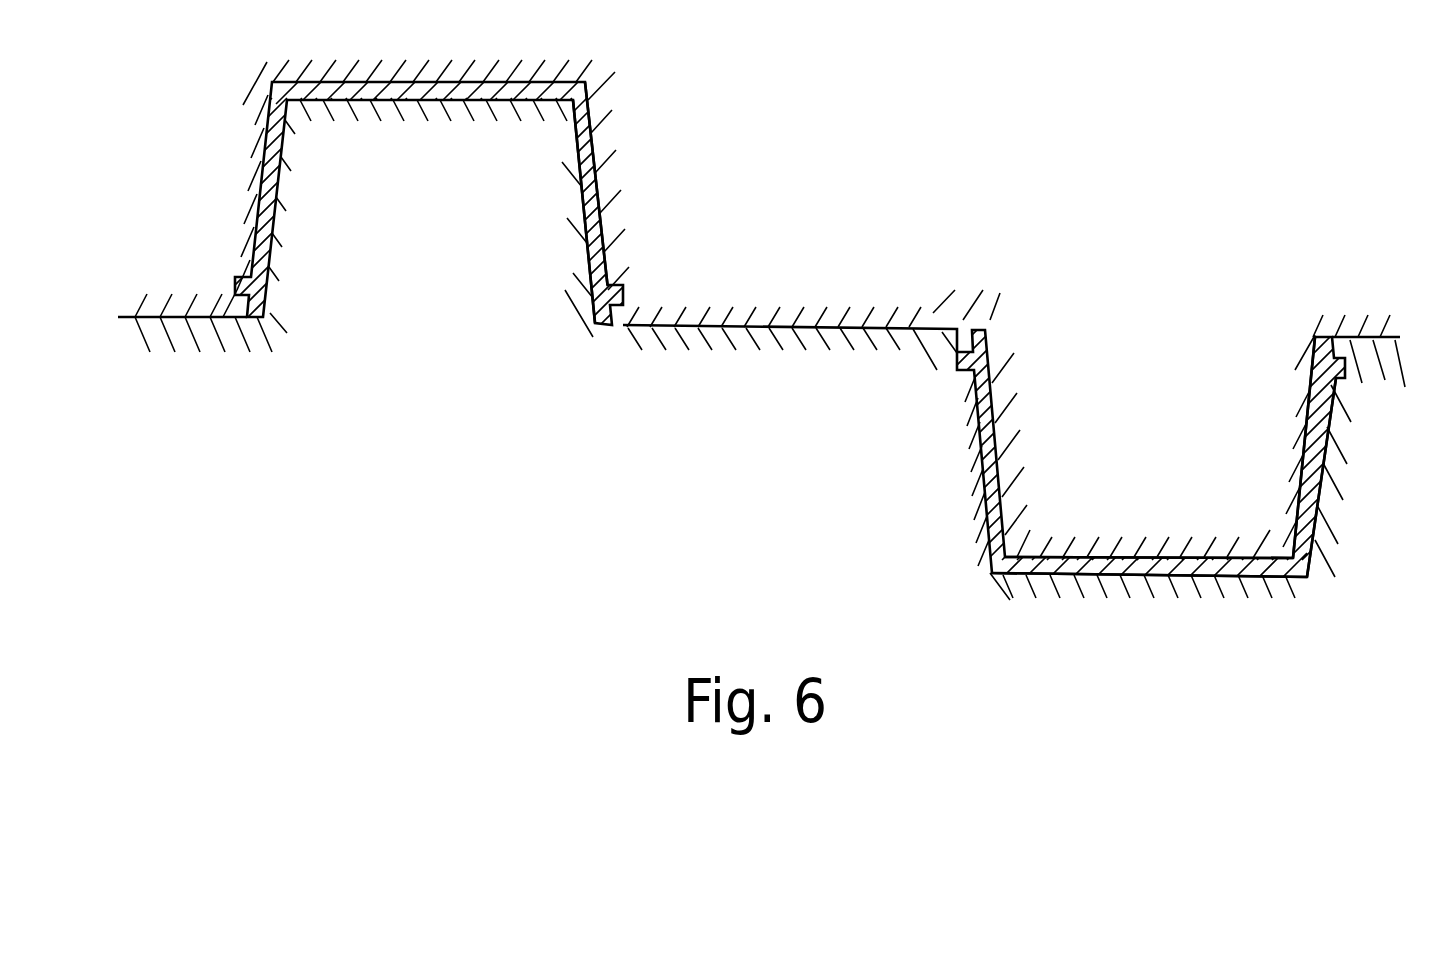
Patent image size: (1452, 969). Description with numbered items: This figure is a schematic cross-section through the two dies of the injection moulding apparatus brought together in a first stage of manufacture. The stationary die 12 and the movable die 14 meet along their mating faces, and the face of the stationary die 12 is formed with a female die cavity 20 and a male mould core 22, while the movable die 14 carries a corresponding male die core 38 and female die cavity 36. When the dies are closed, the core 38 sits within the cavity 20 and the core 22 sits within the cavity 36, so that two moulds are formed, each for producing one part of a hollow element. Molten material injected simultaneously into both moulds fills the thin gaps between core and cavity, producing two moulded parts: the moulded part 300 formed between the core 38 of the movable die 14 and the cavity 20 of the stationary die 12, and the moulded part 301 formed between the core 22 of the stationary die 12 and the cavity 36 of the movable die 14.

The female die cavity 20 is at (601, 121).
The moulded part 300 is at (602, 223).
The male die core 38 is at (434, 231).
The stationary die 12 is at (899, 268).
The movable die 14 is at (786, 453).
The male mould core 22 is at (1156, 443).
The female die cavity 36 is at (1033, 576).
The moulded part 301 is at (1327, 442).